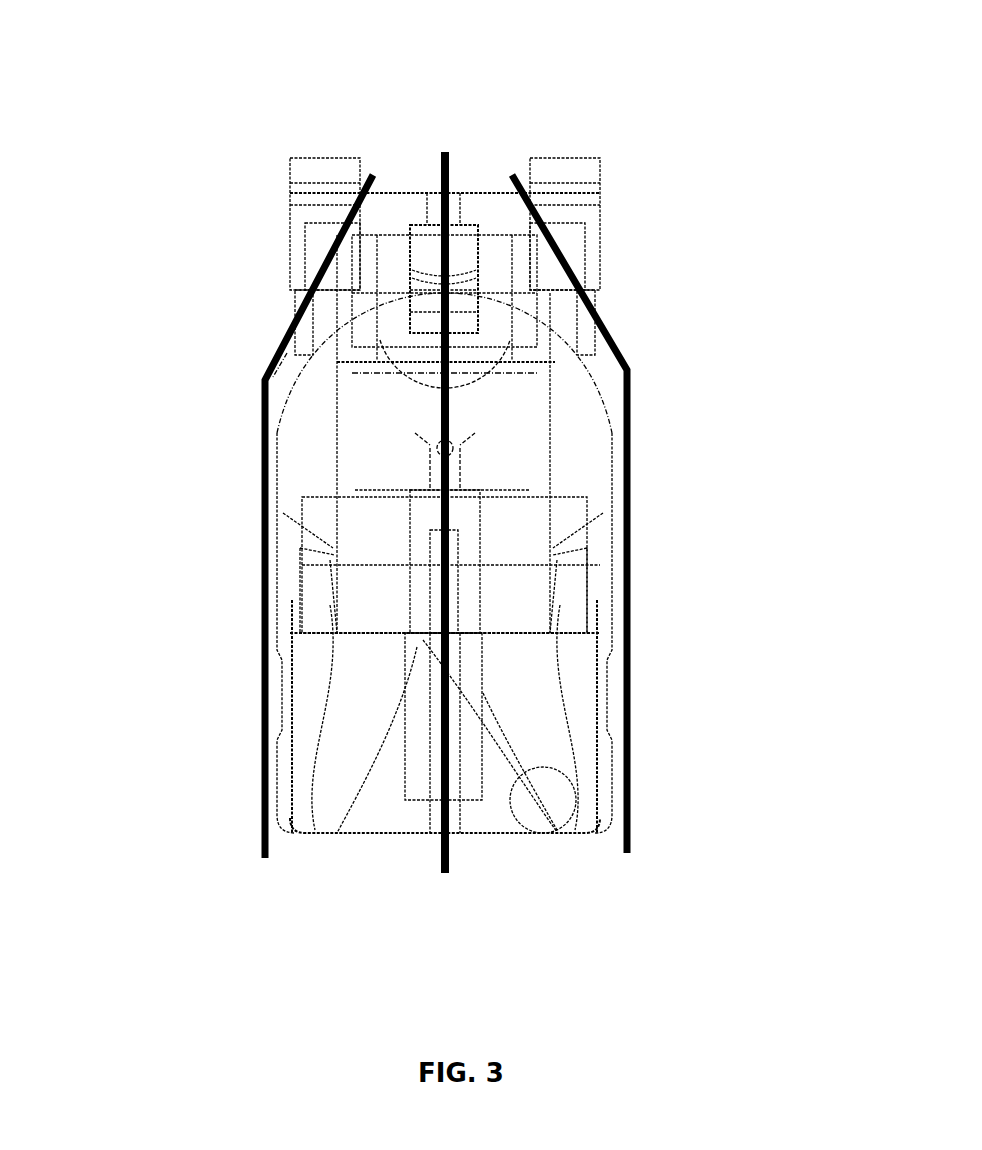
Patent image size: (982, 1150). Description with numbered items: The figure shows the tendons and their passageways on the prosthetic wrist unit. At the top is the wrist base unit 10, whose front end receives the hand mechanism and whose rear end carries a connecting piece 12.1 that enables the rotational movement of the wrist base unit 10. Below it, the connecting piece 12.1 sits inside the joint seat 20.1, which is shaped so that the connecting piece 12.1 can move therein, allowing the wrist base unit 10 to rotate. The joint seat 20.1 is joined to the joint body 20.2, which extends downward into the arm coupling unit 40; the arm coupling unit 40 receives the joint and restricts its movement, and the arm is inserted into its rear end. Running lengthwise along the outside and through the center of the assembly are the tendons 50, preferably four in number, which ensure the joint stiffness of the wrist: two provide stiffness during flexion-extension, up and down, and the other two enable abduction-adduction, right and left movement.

The wrist base unit 10 is at (582, 262).
The connecting piece 12.1 is at (453, 358).
The joint seat 20.1 is at (392, 427).
The joint body 20.2 is at (400, 606).
The arm coupling unit 40 is at (558, 838).
The tendon 50 is at (427, 153).